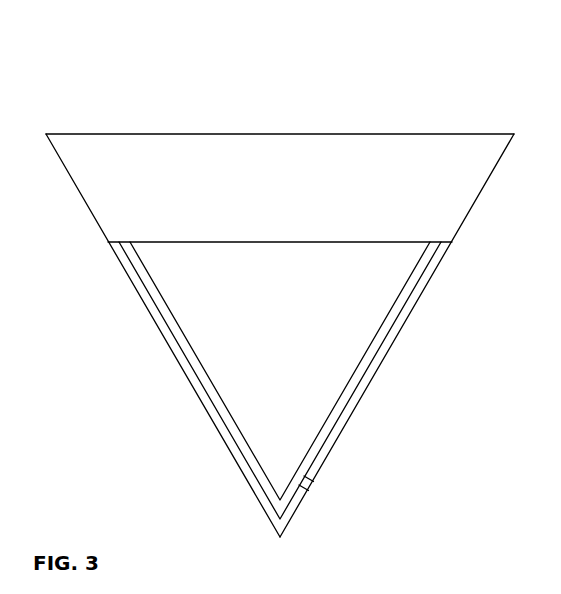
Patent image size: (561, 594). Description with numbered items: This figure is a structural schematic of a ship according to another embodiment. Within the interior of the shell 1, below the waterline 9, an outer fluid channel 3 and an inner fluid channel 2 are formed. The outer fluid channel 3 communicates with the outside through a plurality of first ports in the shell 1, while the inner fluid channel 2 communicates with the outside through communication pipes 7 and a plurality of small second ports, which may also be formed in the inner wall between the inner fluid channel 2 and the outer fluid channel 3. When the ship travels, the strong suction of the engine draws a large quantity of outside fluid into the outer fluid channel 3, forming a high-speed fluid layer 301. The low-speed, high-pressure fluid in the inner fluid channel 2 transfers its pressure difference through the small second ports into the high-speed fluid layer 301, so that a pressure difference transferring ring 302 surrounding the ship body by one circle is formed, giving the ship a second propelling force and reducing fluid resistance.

The shell 1 is at (275, 277).
The waterline 9 is at (280, 129).
The outer fluid channel 3 is at (397, 335).
The high-speed fluid layer 301 is at (161, 335).
The pressure difference transferring ring 302 is at (233, 371).
The inner fluid channel 2 is at (298, 380).
The communication pipe 7 is at (388, 498).